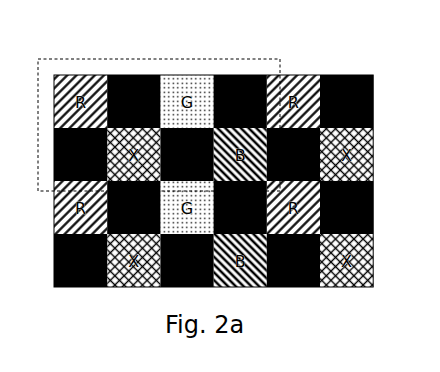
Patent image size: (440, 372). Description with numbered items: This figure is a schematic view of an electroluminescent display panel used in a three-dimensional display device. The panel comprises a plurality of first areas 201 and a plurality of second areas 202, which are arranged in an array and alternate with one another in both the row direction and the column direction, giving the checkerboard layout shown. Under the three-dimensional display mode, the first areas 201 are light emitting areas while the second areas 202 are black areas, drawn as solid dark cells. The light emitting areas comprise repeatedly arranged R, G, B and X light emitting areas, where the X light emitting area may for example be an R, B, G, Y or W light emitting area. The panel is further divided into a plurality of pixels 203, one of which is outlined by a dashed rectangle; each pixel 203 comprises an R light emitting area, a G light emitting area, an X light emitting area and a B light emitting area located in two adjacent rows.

The first area 201 is at (82, 75).
The second area 202 is at (133, 75).
The pixel 203 is at (203, 59).